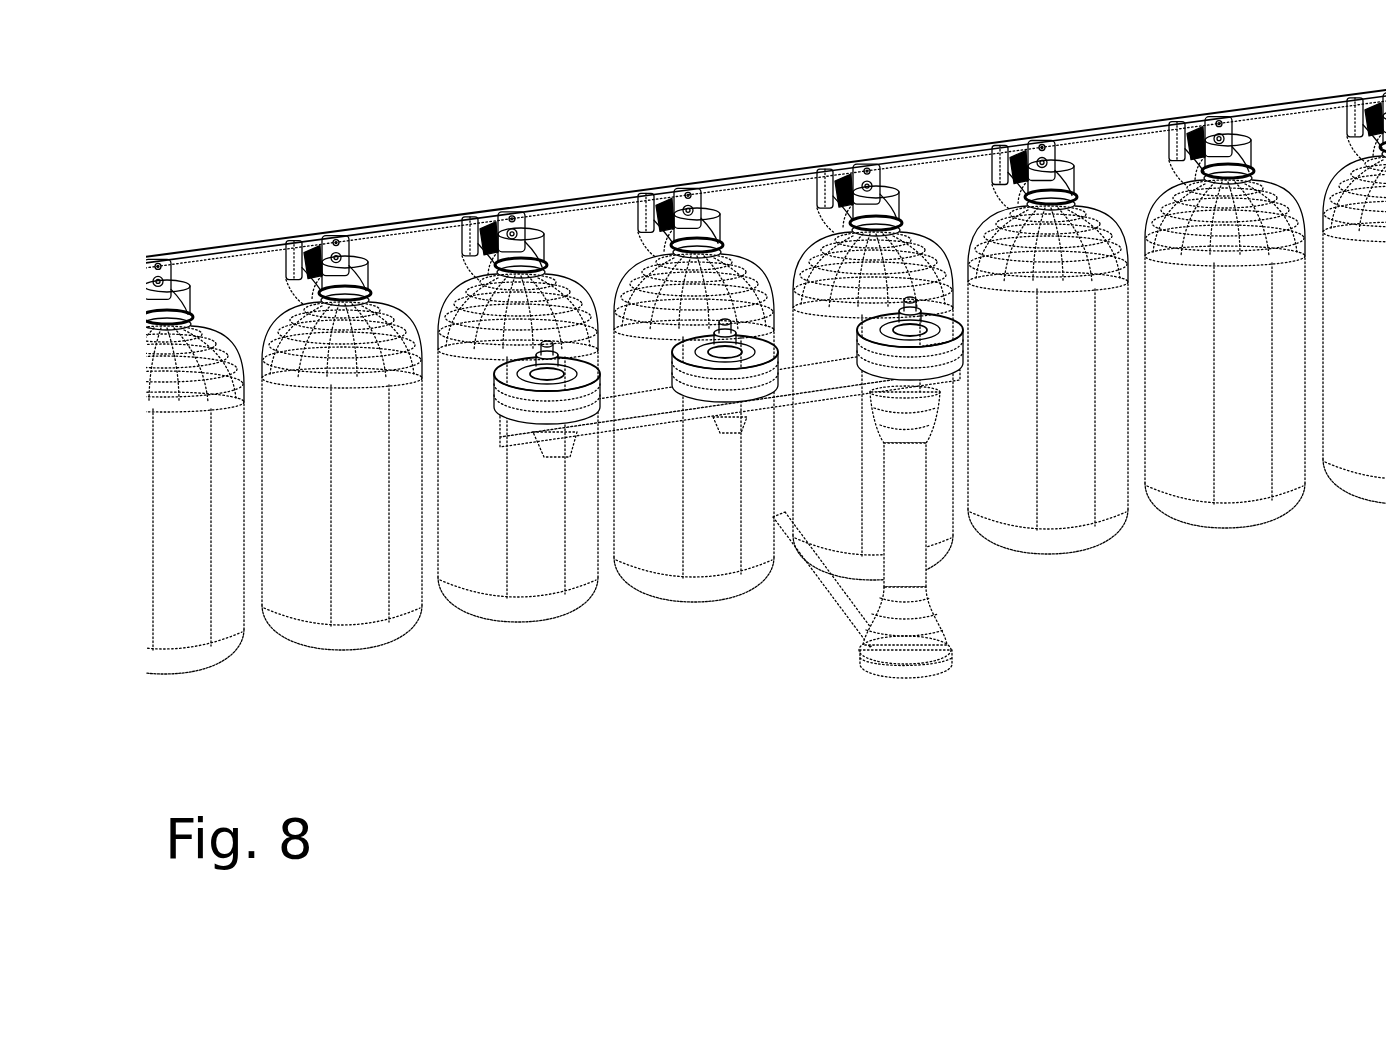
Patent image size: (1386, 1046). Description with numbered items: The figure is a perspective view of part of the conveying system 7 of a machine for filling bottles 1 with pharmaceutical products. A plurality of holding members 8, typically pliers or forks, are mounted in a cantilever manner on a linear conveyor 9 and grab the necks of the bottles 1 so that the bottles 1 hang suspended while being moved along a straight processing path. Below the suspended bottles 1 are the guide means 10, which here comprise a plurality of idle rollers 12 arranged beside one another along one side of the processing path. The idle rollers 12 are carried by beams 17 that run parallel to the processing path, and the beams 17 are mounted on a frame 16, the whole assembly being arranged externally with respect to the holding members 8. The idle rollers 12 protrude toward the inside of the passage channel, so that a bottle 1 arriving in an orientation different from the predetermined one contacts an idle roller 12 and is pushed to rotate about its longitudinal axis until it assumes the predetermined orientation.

The bottles 1 is at (1232, 484).
The conveying system 7 is at (531, 89).
The holding members 8 is at (1024, 130).
The conveyor 9 is at (207, 247).
The guide means 10 is at (628, 468).
The idle rollers 12 is at (693, 388).
The frame 16 is at (913, 564).
The beams 17 is at (818, 387).